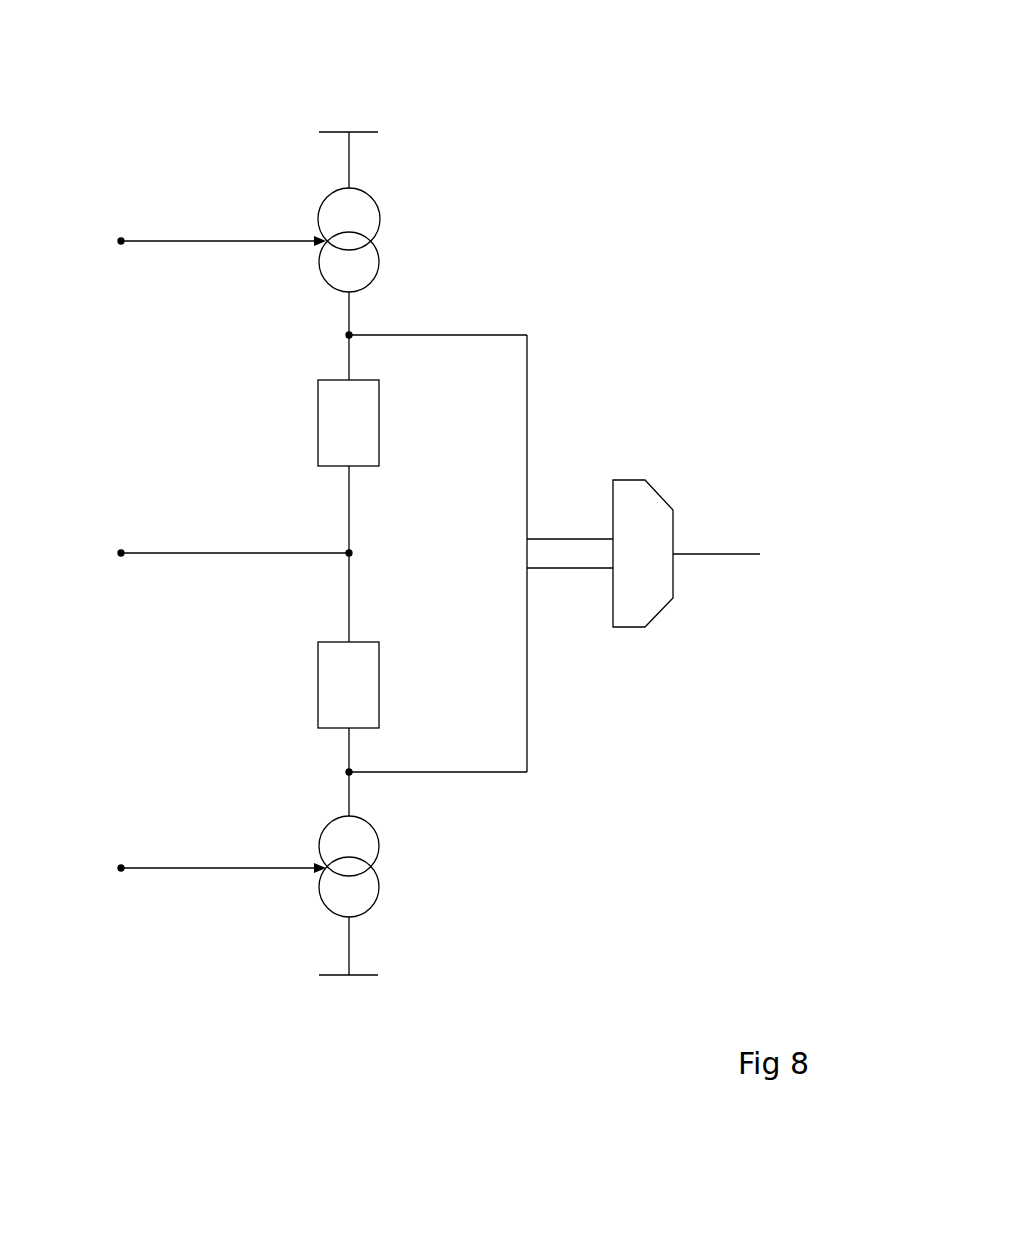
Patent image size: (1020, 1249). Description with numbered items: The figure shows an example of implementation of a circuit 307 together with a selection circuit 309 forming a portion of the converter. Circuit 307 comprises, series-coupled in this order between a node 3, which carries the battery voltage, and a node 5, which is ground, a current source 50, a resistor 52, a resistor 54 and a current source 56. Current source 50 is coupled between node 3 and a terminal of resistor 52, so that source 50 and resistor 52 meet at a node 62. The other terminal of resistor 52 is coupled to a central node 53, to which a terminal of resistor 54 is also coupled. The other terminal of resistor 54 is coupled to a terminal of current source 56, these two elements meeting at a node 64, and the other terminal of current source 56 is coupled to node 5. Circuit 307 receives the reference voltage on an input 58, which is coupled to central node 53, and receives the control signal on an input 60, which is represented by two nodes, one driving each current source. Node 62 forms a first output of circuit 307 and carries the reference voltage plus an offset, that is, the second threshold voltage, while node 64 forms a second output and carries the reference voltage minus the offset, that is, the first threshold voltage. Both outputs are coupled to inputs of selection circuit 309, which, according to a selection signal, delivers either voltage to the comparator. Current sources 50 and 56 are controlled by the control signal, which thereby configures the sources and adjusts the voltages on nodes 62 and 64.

The circuit 307 is at (592, 95).
The node 3 is at (380, 134).
The current source 50 is at (380, 218).
The input 60 is at (121, 240).
The node 62 is at (352, 333).
The resistor 52 is at (379, 430).
The central node 53 is at (355, 553).
The input 58 is at (123, 551).
The resistor 54 is at (379, 690).
The node 64 is at (352, 770).
The current source 56 is at (380, 887).
The node 5 is at (365, 973).
The selection circuit 309 is at (625, 628).